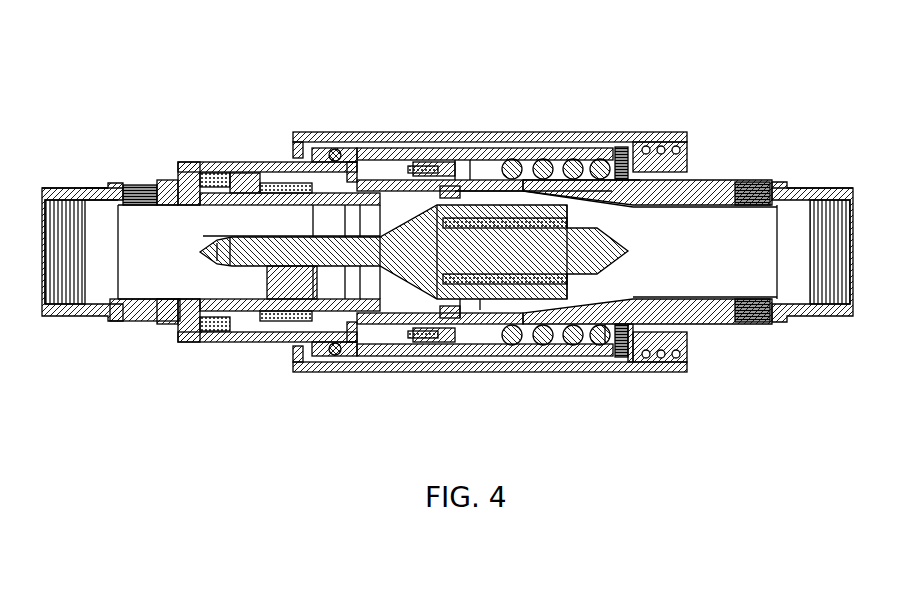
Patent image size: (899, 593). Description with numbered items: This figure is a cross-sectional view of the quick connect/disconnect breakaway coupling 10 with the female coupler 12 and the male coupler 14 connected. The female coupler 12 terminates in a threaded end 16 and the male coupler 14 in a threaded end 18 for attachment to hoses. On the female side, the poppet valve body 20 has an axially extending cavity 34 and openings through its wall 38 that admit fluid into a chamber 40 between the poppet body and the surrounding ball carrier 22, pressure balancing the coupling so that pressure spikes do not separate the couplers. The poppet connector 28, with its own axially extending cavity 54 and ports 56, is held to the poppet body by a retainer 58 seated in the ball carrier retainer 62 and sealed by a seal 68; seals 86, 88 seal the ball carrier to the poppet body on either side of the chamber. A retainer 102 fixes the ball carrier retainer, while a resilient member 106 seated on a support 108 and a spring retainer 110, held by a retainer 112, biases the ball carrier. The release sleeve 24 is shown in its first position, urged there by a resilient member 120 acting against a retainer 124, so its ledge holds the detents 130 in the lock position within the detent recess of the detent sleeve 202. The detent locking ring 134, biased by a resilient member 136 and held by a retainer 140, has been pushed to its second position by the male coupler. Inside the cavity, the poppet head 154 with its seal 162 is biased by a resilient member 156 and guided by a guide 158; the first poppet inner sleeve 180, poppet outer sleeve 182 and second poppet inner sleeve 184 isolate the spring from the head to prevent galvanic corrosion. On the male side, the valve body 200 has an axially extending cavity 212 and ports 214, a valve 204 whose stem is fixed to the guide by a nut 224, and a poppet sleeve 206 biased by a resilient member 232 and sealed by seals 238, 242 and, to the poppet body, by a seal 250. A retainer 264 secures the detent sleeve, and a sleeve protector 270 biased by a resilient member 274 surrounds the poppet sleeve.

The quick connect/disconnect breakaway coupling 10 is at (773, 48).
The female coupler 12 is at (809, 129).
The male coupler 14 is at (130, 94).
The threaded end 16 is at (850, 220).
The threaded end 18 is at (42, 280).
The poppet valve body 20 is at (397, 312).
The ball carrier 22 is at (395, 148).
The release sleeve 24 is at (430, 132).
The poppet connector 28 is at (695, 326).
The axially extending cavity 34 is at (431, 198).
The wall 38 is at (445, 162).
The chamber 40 is at (430, 166).
The axially extending cavity 54 is at (718, 256).
The ports 56 is at (752, 182).
The retainer 58 is at (660, 165).
The ball carrier retainer 62 is at (670, 142).
The seal 68 is at (624, 147).
The seal 86 is at (462, 320).
The seal 88 is at (485, 312).
The retainer 102 is at (632, 362).
The resilient member 106 is at (542, 346).
The support 108 is at (508, 346).
The spring retainer 110 is at (604, 345).
The retainer 112 is at (620, 357).
The resilient member 120 is at (660, 358).
The retainer 124 is at (688, 366).
The detents 130 is at (333, 356).
The detent locking ring 134 is at (362, 180).
The resilient member 136 is at (420, 342).
The retainer 140 is at (350, 356).
The poppet head 154 is at (505, 200).
The resilient member 156 is at (570, 159).
The guide 158 is at (520, 160).
The seal 162 is at (455, 318).
The first poppet inner sleeve 180 is at (602, 182).
The poppet outer sleeve 182 is at (492, 178).
The second poppet inner sleeve 184 is at (582, 222).
The valve body 200 is at (95, 188).
The detent sleeve 202 is at (192, 162).
The valve 204 is at (382, 324).
The poppet sleeve 206 is at (245, 176).
The axially extending cavity 212 is at (181, 256).
The ports 214 is at (140, 186).
The nut 224 is at (168, 312).
The resilient member 232 is at (222, 334).
The seal 238 is at (425, 338).
The seal 242 is at (222, 330).
The seal 250 is at (336, 149).
The retainer 264 is at (205, 176).
The sleeve protector 270 is at (285, 183).
The resilient member 274 is at (290, 322).